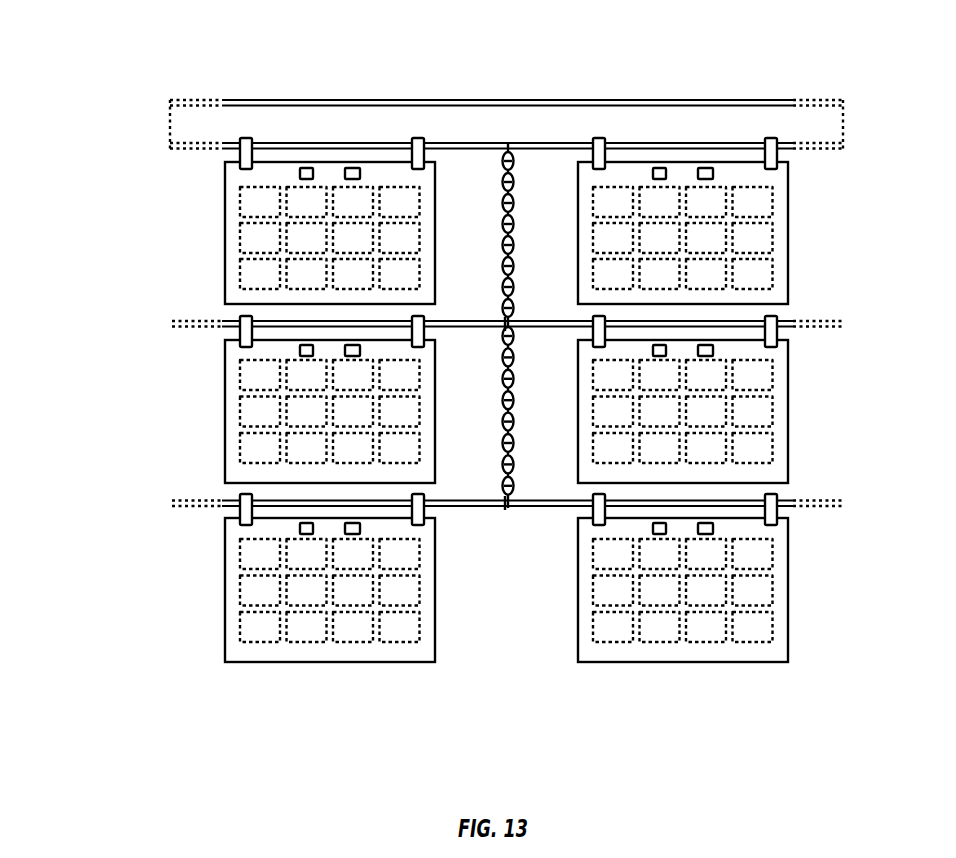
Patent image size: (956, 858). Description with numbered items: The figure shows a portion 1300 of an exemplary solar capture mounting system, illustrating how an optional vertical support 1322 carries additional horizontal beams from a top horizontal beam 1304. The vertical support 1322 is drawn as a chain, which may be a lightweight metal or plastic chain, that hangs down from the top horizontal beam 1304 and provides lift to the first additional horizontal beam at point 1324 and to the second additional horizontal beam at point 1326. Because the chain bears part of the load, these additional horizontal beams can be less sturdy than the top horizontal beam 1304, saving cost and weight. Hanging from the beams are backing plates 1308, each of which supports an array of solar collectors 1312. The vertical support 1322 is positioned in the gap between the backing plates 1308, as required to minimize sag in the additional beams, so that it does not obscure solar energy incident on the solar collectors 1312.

The portion of solar capture mounting system 1300 is at (113, 32).
The top horizontal beam 1304 is at (668, 99).
The backing plate 1308 is at (277, 662).
The solar collector 1312 is at (385, 642).
The optional vertical support 1322 is at (500, 244).
The point 1324 is at (529, 308).
The point 1326 is at (529, 488).